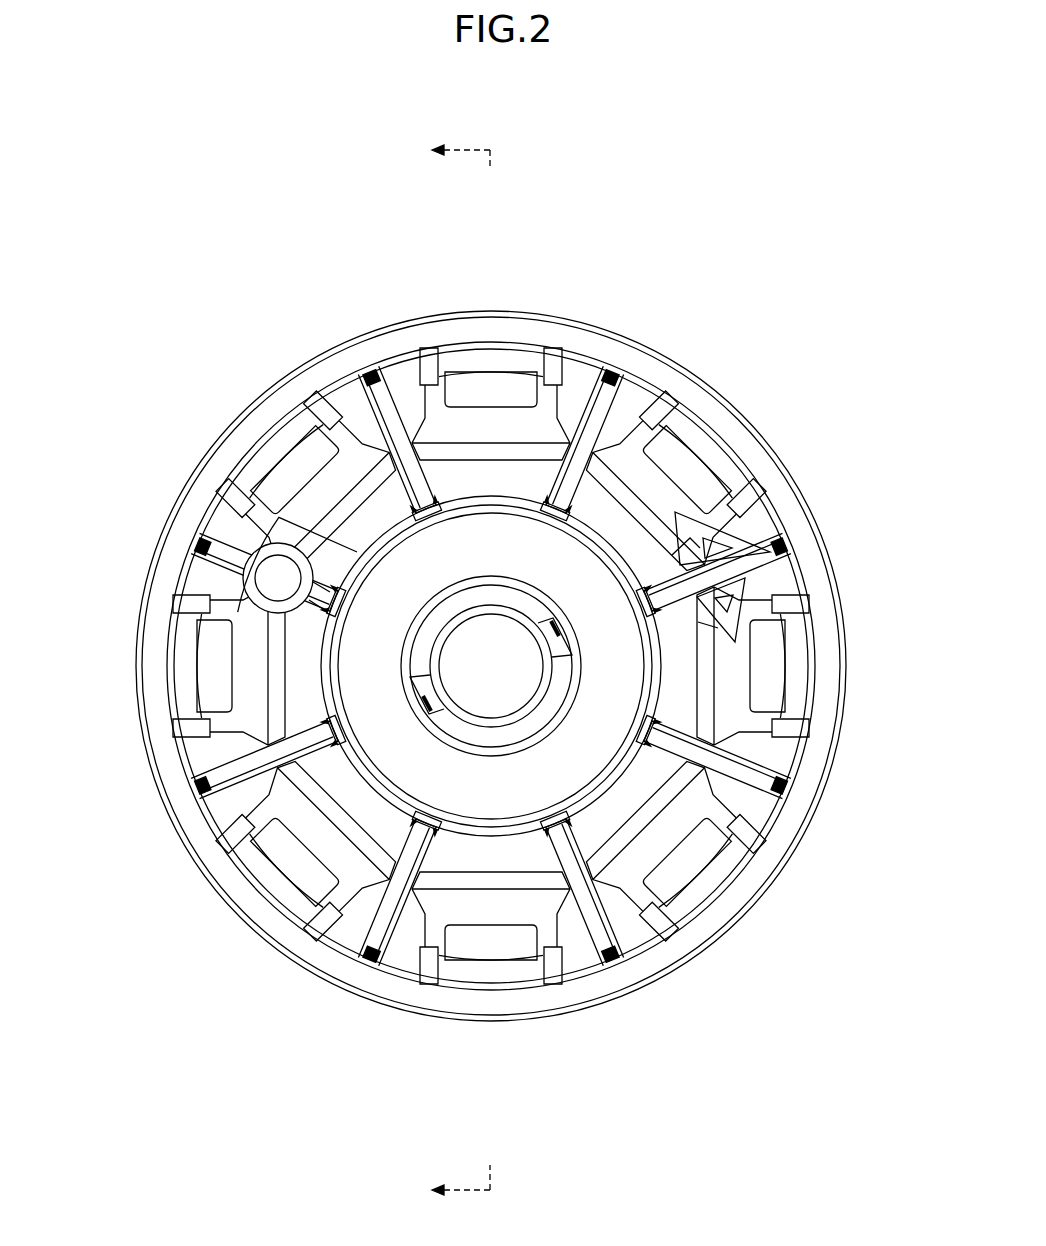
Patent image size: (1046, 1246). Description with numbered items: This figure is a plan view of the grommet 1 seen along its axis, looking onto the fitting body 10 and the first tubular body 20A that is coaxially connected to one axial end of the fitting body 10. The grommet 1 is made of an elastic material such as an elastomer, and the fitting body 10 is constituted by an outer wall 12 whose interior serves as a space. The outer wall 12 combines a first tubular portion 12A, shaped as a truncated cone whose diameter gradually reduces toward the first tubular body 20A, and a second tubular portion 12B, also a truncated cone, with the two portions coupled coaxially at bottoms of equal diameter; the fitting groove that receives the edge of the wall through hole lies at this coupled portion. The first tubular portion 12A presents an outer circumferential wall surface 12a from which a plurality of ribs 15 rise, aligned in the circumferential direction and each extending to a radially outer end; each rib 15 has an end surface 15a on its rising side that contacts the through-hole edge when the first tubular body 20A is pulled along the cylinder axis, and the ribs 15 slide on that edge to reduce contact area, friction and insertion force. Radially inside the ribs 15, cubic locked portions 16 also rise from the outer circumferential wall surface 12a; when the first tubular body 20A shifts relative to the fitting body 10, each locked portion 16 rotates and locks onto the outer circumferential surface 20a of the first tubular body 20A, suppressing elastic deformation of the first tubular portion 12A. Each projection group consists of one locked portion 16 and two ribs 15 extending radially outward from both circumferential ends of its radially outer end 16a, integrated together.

The grommet 1 is at (291, 139).
The fitting body 10 is at (803, 489).
The outer wall 12 is at (572, 666).
The outer circumferential wall surface 12a is at (745, 785).
The first tubular portion 12A is at (390, 357).
The second tubular portion 12B is at (782, 458).
The rib 15 is at (448, 364).
The end surface 15a is at (429, 360).
The locked portion 16 is at (598, 407).
The radially outer end 16a is at (488, 404).
The outer circumferential surface 20a is at (372, 548).
The first tubular body 20A is at (217, 538).